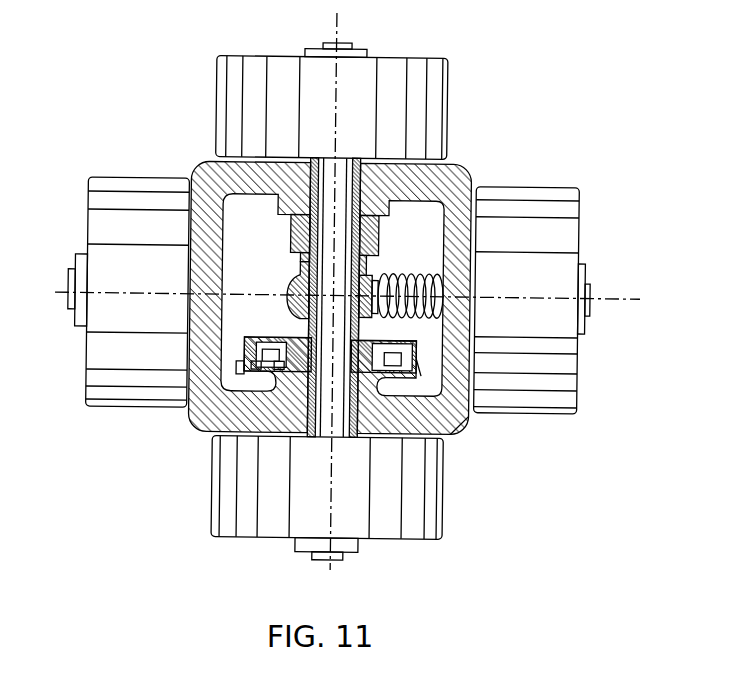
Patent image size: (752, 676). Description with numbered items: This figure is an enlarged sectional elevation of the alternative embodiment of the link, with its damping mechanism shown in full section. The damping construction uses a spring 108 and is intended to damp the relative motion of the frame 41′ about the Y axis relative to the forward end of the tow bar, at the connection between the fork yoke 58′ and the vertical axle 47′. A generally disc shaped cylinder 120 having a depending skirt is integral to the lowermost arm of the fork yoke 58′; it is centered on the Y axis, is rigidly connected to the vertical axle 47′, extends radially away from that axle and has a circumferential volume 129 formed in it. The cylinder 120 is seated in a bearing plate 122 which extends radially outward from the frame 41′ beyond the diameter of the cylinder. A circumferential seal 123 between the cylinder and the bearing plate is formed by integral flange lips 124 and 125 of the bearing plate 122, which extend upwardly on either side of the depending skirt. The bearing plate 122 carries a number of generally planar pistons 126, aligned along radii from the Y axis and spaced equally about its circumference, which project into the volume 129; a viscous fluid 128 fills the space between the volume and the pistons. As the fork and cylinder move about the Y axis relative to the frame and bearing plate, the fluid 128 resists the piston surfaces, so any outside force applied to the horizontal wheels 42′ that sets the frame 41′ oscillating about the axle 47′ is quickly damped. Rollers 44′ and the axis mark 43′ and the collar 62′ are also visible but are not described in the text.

The roller 44′ is at (413, 101).
The frame 41′ is at (470, 173).
The horizontal wheels 42′ is at (562, 230).
The axis 43′ is at (620, 294).
The pistons 126 is at (441, 352).
The flange lip 124 is at (471, 391).
The vertical axle 47′ is at (339, 413).
The spring 108 is at (406, 272).
The collar 62′ is at (366, 319).
The fork yoke 58′ is at (289, 241).
The cylinder 120 is at (252, 336).
The circumferential volume 129 is at (265, 341).
The flange lip 125 is at (241, 378).
The circumferential seal 123 is at (250, 371).
The viscous fluid 128 is at (260, 369).
The bearing plate 122 is at (268, 381).